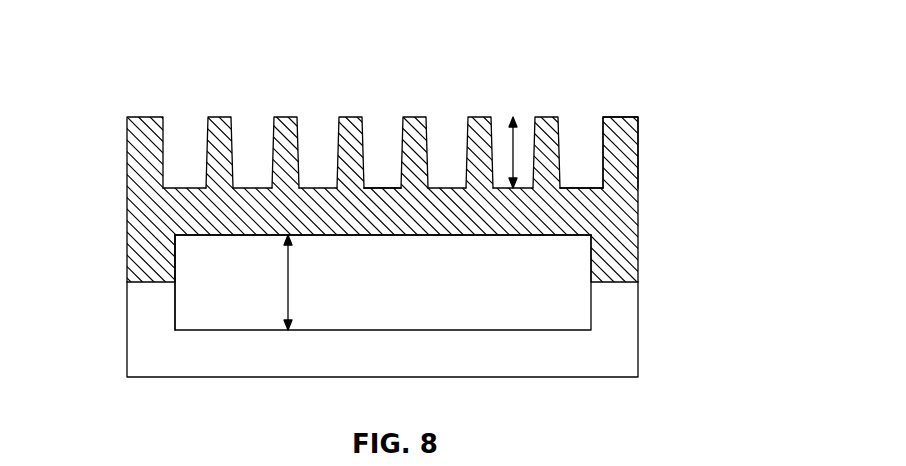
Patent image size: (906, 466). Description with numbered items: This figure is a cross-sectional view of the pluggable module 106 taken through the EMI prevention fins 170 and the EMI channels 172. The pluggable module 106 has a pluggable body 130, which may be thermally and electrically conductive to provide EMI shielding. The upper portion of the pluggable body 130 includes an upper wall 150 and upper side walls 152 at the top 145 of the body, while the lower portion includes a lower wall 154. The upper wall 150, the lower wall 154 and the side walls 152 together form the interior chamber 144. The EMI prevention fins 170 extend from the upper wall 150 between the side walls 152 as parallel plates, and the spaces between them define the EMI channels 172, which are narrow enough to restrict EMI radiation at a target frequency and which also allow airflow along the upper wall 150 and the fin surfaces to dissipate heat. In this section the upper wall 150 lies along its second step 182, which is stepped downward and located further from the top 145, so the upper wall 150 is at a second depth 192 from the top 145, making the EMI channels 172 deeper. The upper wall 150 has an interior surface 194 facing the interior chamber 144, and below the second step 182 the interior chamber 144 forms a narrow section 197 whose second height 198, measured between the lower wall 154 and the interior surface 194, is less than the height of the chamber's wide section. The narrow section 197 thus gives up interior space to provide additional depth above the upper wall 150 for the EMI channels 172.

The pluggable module 106 is at (399, 211).
The pluggable body 130 is at (627, 218).
The upper side walls 152 is at (127, 237).
The top 145 is at (620, 117).
The EMI prevention fins 170 is at (352, 118).
The upper wall 150 is at (258, 197).
The EMI channels 172 is at (386, 136).
The second step 182 is at (583, 187).
The second depth 192 is at (513, 155).
The lower wall 154 is at (428, 353).
The interior chamber 144 is at (537, 295).
The narrow section 197 is at (230, 307).
The second height 198 is at (289, 283).
The interior surface 194 is at (232, 233).